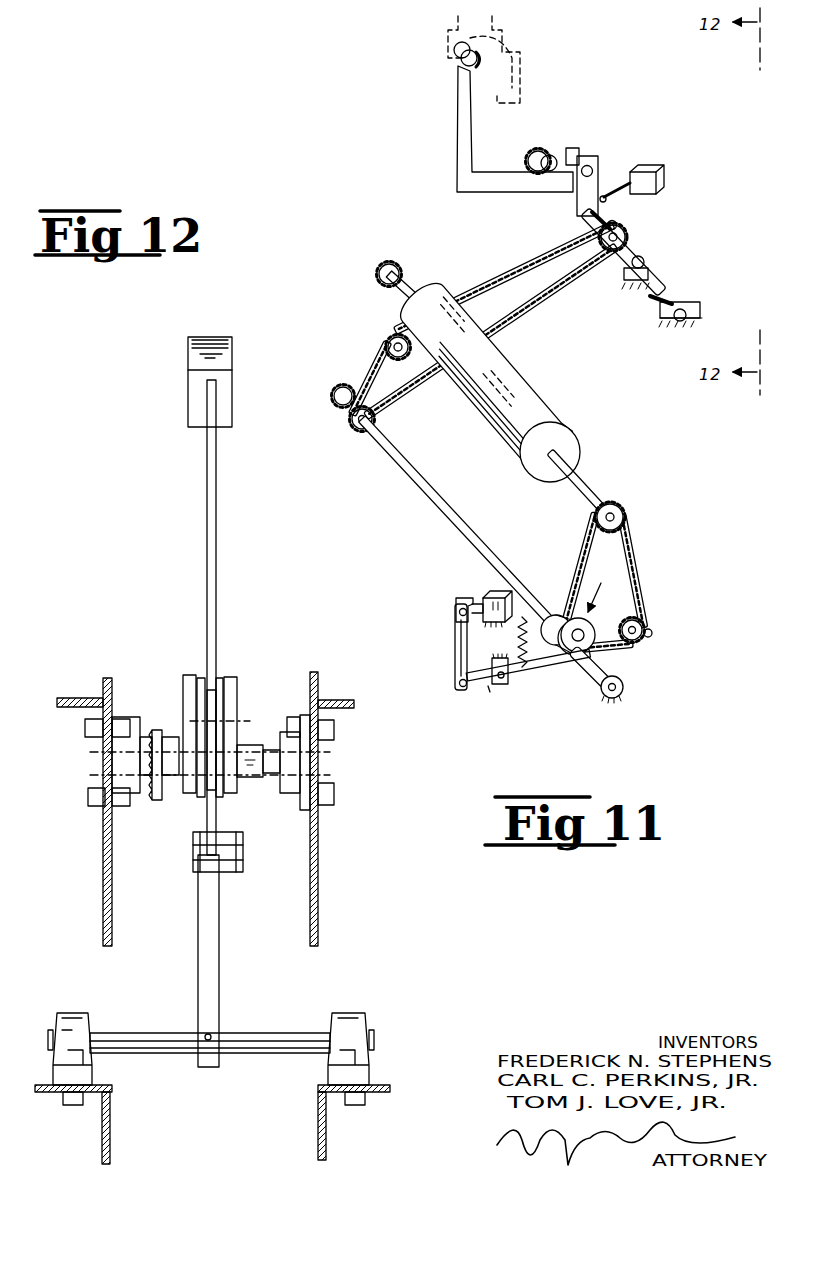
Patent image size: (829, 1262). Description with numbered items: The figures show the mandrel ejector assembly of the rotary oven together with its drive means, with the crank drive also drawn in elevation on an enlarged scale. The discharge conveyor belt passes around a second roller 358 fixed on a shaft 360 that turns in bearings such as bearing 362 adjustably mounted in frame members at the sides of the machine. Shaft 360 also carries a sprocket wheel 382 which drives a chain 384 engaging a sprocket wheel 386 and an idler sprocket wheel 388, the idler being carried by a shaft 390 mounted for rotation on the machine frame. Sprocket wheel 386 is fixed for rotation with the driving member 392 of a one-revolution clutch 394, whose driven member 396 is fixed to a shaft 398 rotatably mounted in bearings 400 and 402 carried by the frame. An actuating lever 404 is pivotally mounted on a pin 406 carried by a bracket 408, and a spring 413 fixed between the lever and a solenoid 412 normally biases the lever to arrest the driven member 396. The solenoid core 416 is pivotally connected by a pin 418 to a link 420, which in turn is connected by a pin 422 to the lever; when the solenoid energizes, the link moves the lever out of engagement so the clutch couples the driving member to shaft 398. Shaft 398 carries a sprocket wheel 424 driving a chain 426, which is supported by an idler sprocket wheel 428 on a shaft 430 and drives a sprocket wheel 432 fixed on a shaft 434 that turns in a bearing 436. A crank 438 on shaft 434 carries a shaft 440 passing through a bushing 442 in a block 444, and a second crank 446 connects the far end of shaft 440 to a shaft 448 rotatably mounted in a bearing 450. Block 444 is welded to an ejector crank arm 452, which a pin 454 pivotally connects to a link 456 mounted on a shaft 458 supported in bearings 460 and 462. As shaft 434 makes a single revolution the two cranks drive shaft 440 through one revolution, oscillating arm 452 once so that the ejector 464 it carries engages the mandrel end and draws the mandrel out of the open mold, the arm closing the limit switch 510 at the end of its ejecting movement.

In FIG. 11, the second roller 358 is at (575, 452).
In FIG. 11, the shaft 360 is at (606, 502).
In FIG. 11, the bearing 362 is at (398, 266).
In FIG. 11, the sprocket wheel 382 is at (625, 517).
In FIG. 11, the chain 384 is at (641, 582).
In FIG. 11, the sprocket wheel 386 is at (612, 662).
In FIG. 11, the idler sprocket wheel 388 is at (654, 635).
In FIG. 11, the shaft 390 is at (646, 625).
In FIG. 11, the driving member 392 is at (590, 630).
In FIG. 11, the one-revolution clutch 394 is at (607, 588).
In FIG. 11, the driven member 396 is at (556, 612).
In FIG. 11, the shaft 398 is at (478, 524).
In FIG. 11, the bearing 400 is at (608, 700).
In FIG. 11, the bearing 402 is at (332, 396).
In FIG. 11, the actuating lever 404 is at (470, 690).
In FIG. 11, the pin 406 is at (502, 684).
In FIG. 11, the bracket 408 is at (490, 688).
In FIG. 11, the solenoid 412 is at (500, 596).
In FIG. 11, the spring 413 is at (530, 672).
In FIG. 11, the core 416 is at (463, 598).
In FIG. 11, the pin 418 is at (456, 612).
In FIG. 11, the link 420 is at (455, 645).
In FIG. 11, the pin 422 is at (455, 686).
In FIG. 11, the sprocket wheel 424 is at (352, 428).
In FIG. 11, the chain 426 is at (495, 287).
In FIG. 11, the idler sprocket wheel 428 is at (385, 345).
In FIG. 11, the shaft 430 is at (384, 362).
In FIG. 11, the sprocket wheel 432 is at (590, 256).
In FIG. 12, the sprocket wheel 432 is at (156, 800).
In FIG. 11, the shaft 434 is at (600, 235).
In FIG. 12, the shaft 434 is at (170, 737).
In FIG. 12, the bearing 436 is at (130, 717).
In FIG. 11, the crank 438 is at (600, 185).
In FIG. 12, the crank 438 is at (186, 675).
In FIG. 11, the shaft 440 is at (600, 165).
In FIG. 12, the shaft 440 is at (232, 690).
In FIG. 12, the bushing 442 is at (216, 682).
In FIG. 12, the block 444 is at (225, 702).
In FIG. 11, the second crank 446 is at (578, 150).
In FIG. 12, the second crank 446 is at (240, 735).
In FIG. 11, the shaft 448 is at (550, 156).
In FIG. 12, the shaft 448 is at (258, 778).
In FIG. 11, the bearing 450 is at (528, 156).
In FIG. 12, the bearing 450 is at (300, 766).
In FIG. 11, the ejector crank arm 452 is at (510, 185).
In FIG. 12, the ejector crank arm 452 is at (216, 606).
In FIG. 11, the pin 454 is at (625, 227).
In FIG. 12, the pin 454 is at (230, 862).
In FIG. 11, the link 456 is at (655, 270).
In FIG. 12, the link 456 is at (220, 978).
In FIG. 11, the shaft 458 is at (690, 305).
In FIG. 12, the shaft 458 is at (280, 1033).
In FIG. 11, the bearing 460 is at (666, 322).
In FIG. 12, the bearing 460 is at (85, 1020).
In FIG. 11, the bearing 462 is at (625, 280).
In FIG. 12, the bearing 462 is at (360, 1015).
In FIG. 11, the ejector 464 is at (453, 70).
In FIG. 12, the ejector 464 is at (190, 397).
In FIG. 11, the limit switch 510 is at (665, 183).